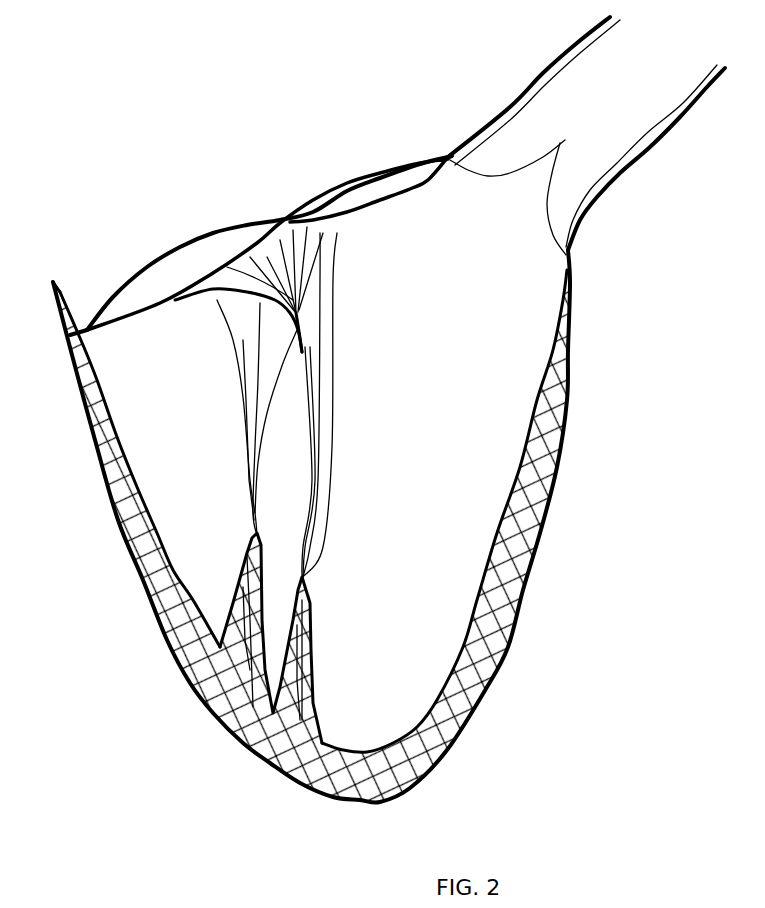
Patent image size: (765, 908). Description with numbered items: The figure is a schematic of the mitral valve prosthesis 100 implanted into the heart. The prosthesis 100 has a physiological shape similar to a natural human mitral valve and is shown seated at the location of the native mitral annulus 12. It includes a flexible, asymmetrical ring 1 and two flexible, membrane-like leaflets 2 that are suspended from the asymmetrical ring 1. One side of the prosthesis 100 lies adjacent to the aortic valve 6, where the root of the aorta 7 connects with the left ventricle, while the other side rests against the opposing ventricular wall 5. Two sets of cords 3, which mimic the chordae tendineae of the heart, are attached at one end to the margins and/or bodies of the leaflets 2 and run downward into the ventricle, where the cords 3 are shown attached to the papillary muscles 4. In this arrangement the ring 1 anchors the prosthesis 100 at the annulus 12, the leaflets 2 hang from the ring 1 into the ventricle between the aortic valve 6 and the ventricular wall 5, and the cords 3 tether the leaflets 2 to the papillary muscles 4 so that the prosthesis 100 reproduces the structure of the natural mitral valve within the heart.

The mitral valve prosthesis 100 is at (128, 123).
The asymmetrical ring 1 is at (145, 258).
The leaflets 2 is at (190, 260).
The native mitral annulus 12 is at (445, 153).
The cords 3 is at (333, 467).
The papillary muscles 4 is at (205, 635).
The ventricular wall 5 is at (127, 538).
The aortic valve 6 is at (566, 164).
The aorta 7 is at (550, 100).